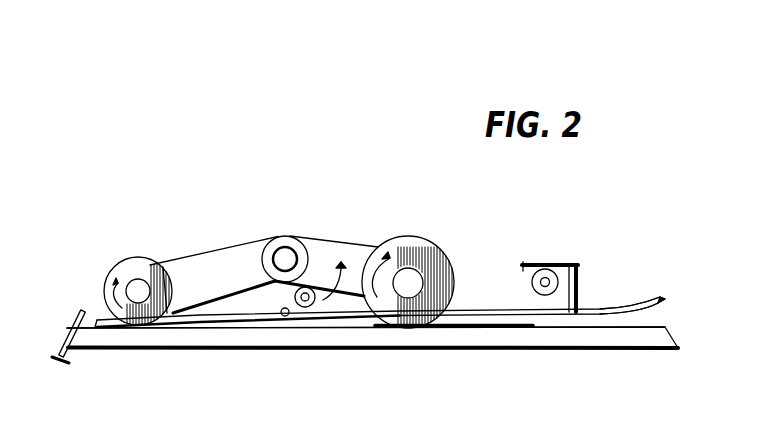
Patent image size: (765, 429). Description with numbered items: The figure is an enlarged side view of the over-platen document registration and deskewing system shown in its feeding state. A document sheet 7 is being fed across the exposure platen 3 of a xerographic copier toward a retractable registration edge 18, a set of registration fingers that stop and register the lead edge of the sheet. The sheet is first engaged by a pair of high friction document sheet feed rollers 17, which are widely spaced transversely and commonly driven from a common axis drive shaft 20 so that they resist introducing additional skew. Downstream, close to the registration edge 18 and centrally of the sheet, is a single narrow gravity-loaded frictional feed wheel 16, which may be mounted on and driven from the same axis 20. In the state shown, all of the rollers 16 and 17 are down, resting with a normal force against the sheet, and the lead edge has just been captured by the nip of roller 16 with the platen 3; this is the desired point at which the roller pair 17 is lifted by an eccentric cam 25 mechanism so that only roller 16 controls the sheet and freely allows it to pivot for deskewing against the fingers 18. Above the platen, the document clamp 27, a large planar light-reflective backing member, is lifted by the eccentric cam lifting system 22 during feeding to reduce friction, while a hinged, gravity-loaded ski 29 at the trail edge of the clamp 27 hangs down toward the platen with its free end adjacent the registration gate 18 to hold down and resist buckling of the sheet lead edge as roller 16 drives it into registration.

The exposure platen 3 is at (297, 338).
The document sheet 7 is at (490, 328).
The single downstream roller 16 is at (130, 270).
The document sheet feed rollers 17 is at (415, 247).
The retractable registration edge 18 is at (72, 329).
The common axis drive shaft 20 is at (288, 252).
The eccentric cam lifting system 22 is at (533, 284).
The eccentric cam 25 is at (322, 310).
The document clamp 27 is at (612, 309).
The ski 29 is at (223, 317).